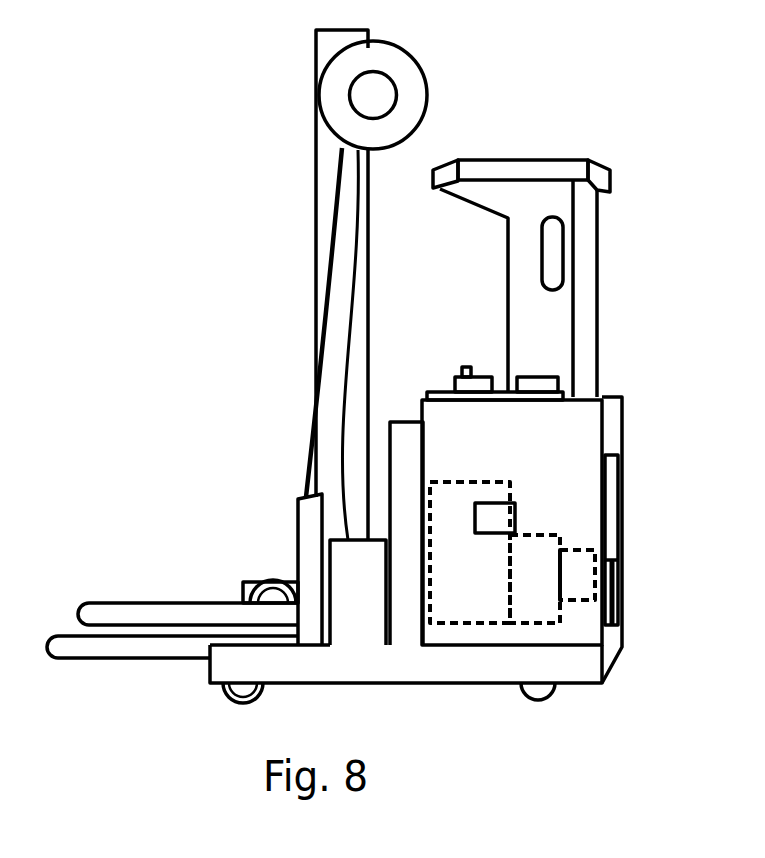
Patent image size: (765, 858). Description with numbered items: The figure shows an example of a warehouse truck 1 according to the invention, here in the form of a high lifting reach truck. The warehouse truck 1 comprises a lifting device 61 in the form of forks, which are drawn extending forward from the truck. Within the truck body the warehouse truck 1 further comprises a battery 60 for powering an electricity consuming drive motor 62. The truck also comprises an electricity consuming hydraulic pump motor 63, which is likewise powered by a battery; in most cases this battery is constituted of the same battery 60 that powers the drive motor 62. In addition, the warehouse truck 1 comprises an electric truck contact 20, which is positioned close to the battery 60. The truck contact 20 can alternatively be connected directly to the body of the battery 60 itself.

The warehouse truck 1 is at (186, 198).
The electric truck contact 20 is at (495, 520).
The battery 60 is at (470, 548).
The lifting device 61 is at (183, 632).
The drive motor 62 is at (535, 579).
The hydraulic pump motor 63 is at (585, 567).